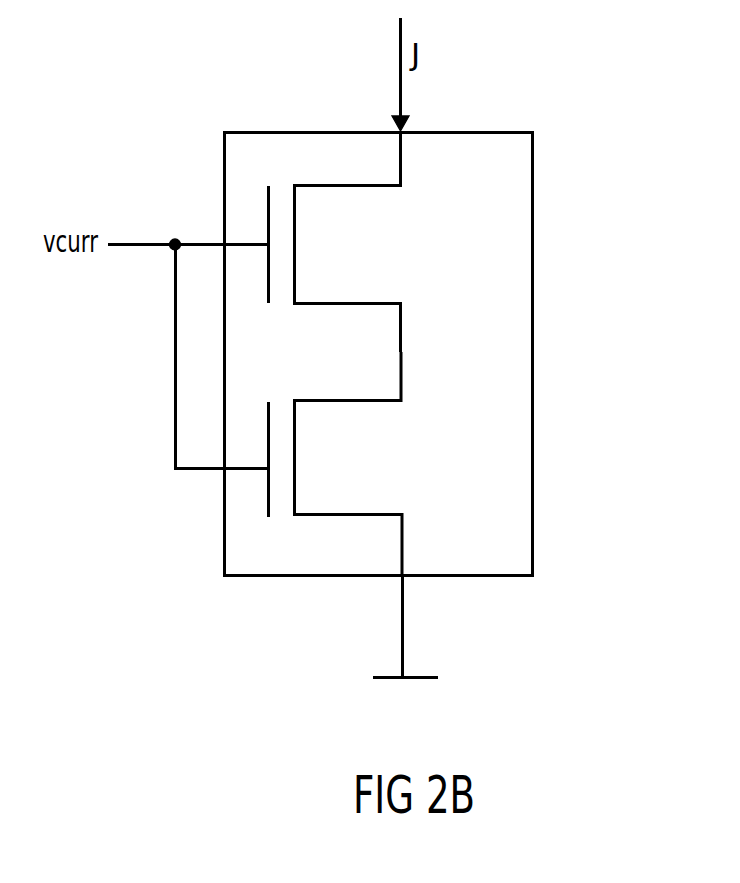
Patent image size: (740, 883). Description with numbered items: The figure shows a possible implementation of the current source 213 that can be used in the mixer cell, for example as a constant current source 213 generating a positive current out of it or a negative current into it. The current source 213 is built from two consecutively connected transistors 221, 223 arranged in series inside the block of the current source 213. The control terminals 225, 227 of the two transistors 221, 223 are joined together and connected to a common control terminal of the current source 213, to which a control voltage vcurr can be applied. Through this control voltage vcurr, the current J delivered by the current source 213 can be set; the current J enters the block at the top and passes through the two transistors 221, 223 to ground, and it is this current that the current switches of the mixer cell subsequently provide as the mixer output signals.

The current source 213 is at (533, 275).
The transistor 221 is at (295, 253).
The transistor 223 is at (295, 474).
The control terminal 225 is at (267, 242).
The control terminal 227 is at (267, 470).